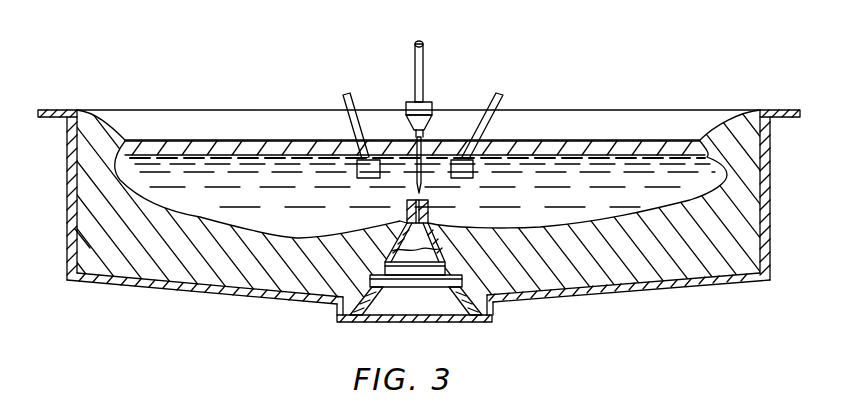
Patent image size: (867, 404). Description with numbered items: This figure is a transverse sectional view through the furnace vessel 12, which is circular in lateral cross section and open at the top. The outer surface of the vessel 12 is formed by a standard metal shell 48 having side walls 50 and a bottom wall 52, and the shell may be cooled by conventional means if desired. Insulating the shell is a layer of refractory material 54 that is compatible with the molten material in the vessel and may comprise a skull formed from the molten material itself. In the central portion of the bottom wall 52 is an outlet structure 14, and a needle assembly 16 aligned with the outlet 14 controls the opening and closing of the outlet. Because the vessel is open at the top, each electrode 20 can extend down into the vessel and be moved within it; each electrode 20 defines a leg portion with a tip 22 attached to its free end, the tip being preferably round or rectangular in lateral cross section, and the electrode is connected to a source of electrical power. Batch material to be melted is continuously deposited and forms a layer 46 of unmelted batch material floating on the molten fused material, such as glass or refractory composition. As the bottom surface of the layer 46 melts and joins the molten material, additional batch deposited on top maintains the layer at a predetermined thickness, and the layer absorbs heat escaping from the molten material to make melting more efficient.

The vessel 12 is at (418, 249).
The outlet structure 14 is at (428, 212).
The needle assembly 16 is at (432, 112).
The electrode 20 is at (348, 118).
The tip 22 is at (364, 178).
The layer of unmelted batch material 46 is at (612, 142).
The metal shell 48 is at (770, 219).
The side walls 50 is at (67, 173).
The bottom wall 52 is at (278, 296).
The refractory material 54 is at (95, 231).